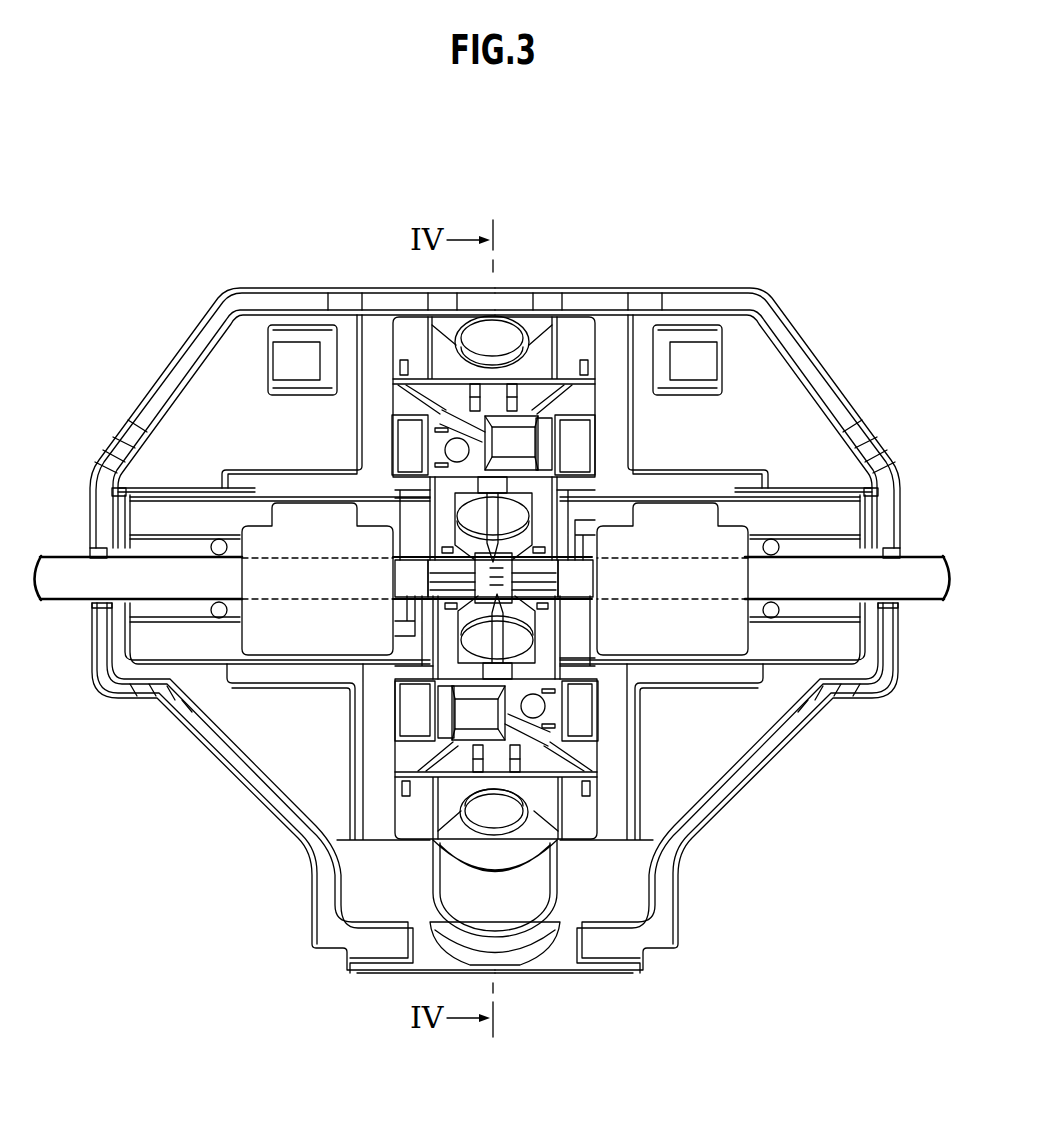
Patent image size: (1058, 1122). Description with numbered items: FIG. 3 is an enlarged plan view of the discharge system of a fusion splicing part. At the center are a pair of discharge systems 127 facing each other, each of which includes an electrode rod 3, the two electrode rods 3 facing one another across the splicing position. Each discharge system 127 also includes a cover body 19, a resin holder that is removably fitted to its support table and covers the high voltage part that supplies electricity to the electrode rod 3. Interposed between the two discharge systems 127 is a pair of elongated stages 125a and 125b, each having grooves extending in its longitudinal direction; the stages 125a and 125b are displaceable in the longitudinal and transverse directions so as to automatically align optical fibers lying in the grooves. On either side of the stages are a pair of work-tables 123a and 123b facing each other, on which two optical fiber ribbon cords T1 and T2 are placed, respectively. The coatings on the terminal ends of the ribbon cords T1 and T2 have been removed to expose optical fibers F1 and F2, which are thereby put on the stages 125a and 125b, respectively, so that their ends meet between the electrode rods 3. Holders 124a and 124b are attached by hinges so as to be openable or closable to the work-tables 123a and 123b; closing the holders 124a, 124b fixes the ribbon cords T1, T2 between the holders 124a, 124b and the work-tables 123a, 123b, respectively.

The electrode rod 3 is at (497, 513).
The cover body 19 is at (522, 440).
The discharge system 127 is at (489, 402).
The work-table 123a is at (797, 547).
The work-table 123b is at (193, 547).
The stage 125a is at (617, 493).
The stage 125b is at (373, 493).
The holder 124a is at (767, 723).
The holder 124b is at (223, 723).
The optical fiber F1 is at (553, 567).
The optical fiber F2 is at (422, 563).
The optical fiber ribbon cord T1 is at (933, 601).
The optical fiber ribbon cord T2 is at (60, 603).